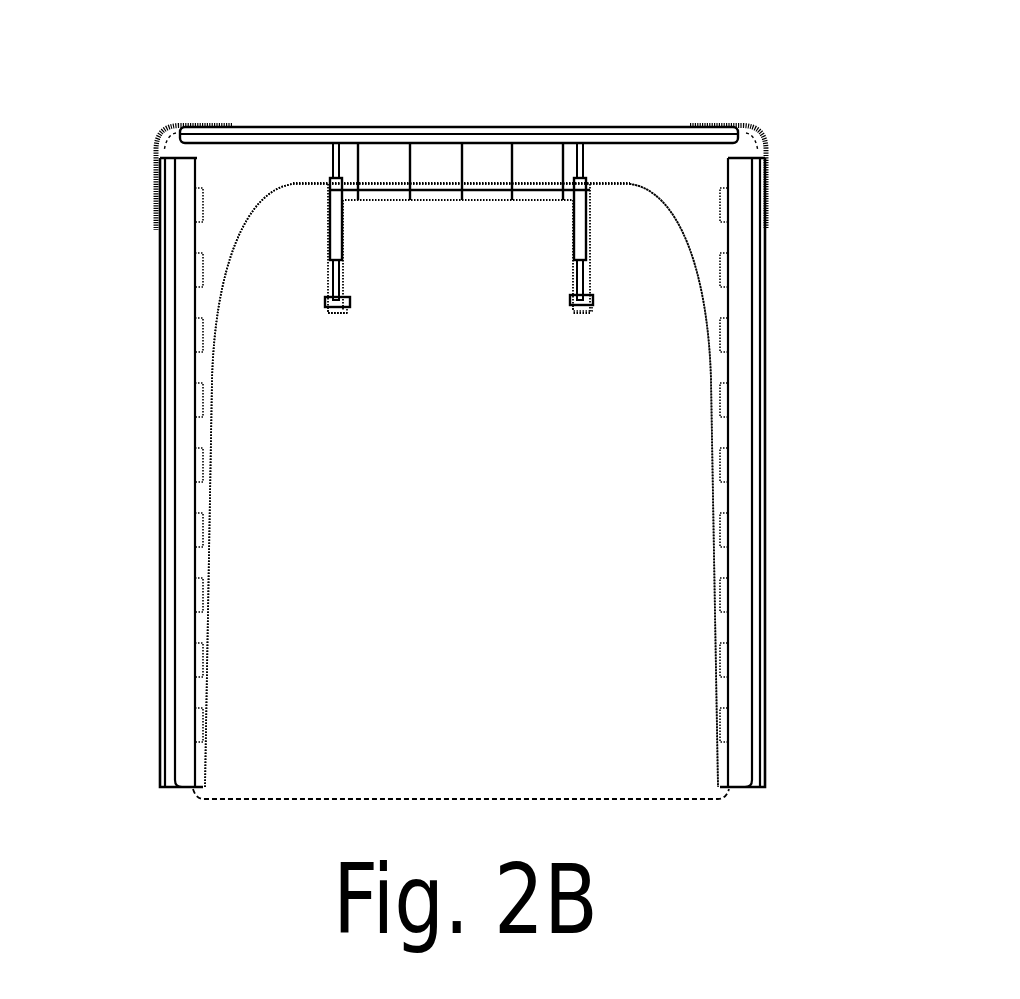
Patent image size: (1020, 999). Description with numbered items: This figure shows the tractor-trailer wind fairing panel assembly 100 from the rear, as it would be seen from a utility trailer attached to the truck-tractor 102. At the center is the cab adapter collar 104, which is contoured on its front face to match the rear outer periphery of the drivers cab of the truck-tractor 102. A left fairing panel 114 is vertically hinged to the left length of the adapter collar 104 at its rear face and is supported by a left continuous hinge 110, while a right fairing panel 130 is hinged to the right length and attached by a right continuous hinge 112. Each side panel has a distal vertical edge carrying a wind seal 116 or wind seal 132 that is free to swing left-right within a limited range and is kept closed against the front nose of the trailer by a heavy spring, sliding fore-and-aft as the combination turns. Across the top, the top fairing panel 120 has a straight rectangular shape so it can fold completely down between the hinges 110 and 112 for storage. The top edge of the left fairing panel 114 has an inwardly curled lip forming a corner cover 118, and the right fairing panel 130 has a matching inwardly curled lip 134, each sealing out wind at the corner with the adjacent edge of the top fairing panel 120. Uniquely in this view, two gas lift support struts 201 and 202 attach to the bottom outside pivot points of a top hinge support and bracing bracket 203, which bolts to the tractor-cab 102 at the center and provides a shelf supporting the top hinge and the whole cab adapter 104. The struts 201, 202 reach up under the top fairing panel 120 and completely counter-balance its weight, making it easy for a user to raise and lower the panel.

The tractor-trailer wind fairing panel assembly 100 is at (296, 42).
The truck-tractor 102 is at (513, 444).
The cab adapter collar 104 is at (318, 180).
The left continuous hinge 110 is at (200, 453).
The right continuous hinge 112 is at (723, 397).
The left fairing panel 114 is at (142, 563).
The wind seal 116 is at (183, 303).
The corner cover 118 is at (181, 118).
The top fairing panel 120 is at (568, 116).
The right fairing panel 130 is at (835, 452).
The wind seal 132 is at (738, 285).
The inwardly curled lip 134 is at (755, 128).
The gas lift support strut 201 is at (337, 229).
The gas lift support strut 202 is at (578, 218).
The top hinge support and bracing bracket 203 is at (345, 275).